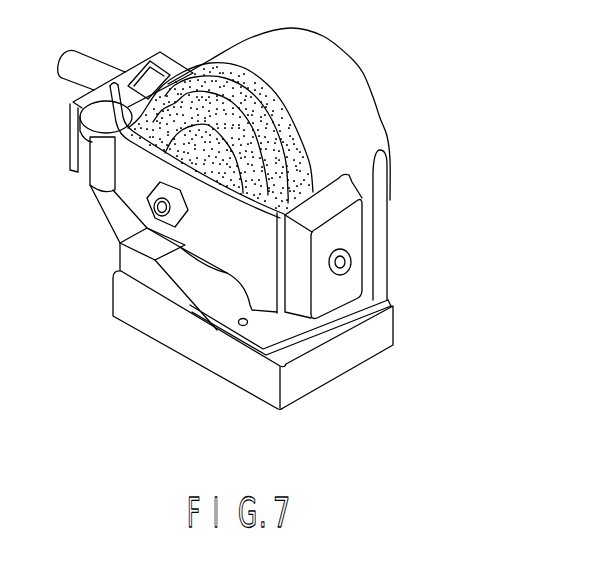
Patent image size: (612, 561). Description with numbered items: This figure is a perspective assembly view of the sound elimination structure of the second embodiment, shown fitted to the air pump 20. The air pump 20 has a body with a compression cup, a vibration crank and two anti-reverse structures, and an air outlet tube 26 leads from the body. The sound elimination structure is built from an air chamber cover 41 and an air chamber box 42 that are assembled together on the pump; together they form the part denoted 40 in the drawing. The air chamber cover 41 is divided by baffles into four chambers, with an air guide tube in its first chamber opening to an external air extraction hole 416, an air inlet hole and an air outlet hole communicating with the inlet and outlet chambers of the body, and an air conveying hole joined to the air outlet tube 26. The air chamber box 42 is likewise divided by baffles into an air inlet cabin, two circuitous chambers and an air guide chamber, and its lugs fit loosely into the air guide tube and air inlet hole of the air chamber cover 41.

The air pump 20 is at (392, 196).
The air outlet tube 26 is at (93, 55).
The base 40 is at (372, 368).
The air chamber cover 41 is at (150, 277).
The air chamber box 42 is at (392, 325).
The external air extraction hole 416 is at (242, 330).